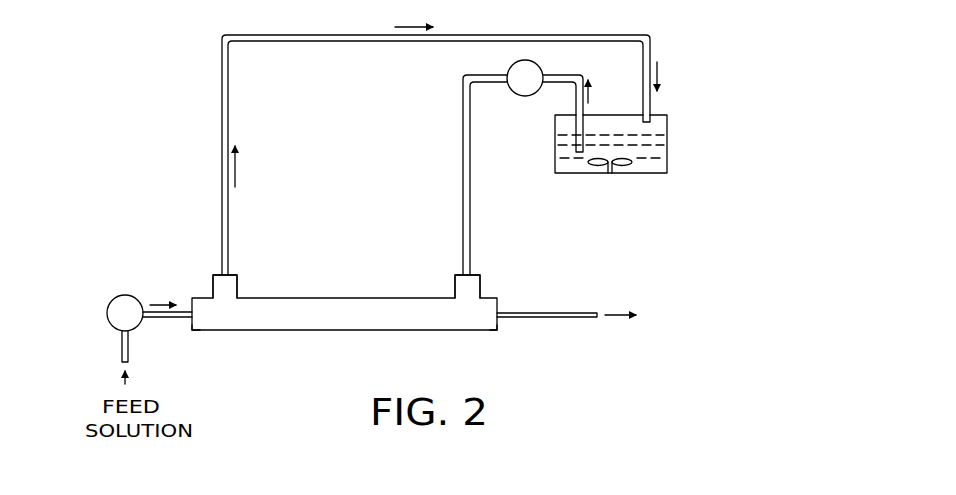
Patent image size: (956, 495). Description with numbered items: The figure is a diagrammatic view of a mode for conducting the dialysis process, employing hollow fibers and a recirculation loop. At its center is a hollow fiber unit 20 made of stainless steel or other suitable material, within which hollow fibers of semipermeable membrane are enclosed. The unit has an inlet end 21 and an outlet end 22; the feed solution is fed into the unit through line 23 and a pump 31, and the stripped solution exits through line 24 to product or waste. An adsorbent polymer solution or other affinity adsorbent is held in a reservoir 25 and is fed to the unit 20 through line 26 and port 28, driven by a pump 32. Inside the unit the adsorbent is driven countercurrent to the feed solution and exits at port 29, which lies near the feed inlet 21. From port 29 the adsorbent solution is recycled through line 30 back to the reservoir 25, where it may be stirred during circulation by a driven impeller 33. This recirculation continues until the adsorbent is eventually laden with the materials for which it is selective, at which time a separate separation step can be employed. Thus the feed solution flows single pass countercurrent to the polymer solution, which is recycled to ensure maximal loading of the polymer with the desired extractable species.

The hollow fiber unit 20 is at (323, 332).
The inlet end 21 is at (200, 332).
The outlet end 22 is at (490, 333).
The feed line 23 is at (183, 312).
The exit line 24 is at (550, 312).
The reservoir 25 is at (648, 173).
The line 26 is at (462, 168).
The port 28 is at (475, 285).
The port 29 is at (233, 283).
The line 30 is at (228, 102).
The pump 31 is at (108, 313).
The pump 32 is at (522, 95).
The driven impeller 33 is at (600, 166).